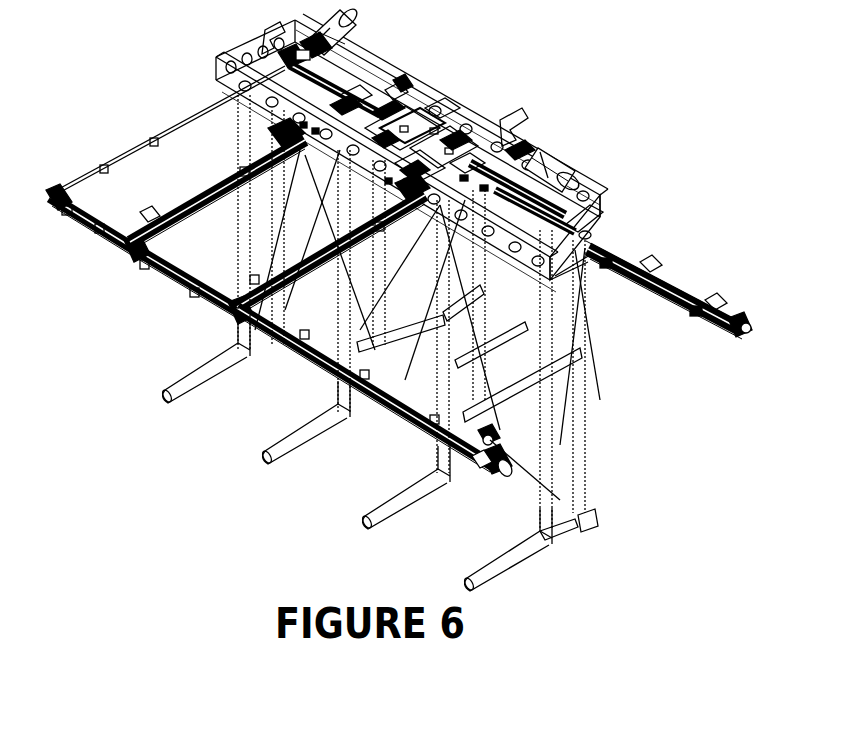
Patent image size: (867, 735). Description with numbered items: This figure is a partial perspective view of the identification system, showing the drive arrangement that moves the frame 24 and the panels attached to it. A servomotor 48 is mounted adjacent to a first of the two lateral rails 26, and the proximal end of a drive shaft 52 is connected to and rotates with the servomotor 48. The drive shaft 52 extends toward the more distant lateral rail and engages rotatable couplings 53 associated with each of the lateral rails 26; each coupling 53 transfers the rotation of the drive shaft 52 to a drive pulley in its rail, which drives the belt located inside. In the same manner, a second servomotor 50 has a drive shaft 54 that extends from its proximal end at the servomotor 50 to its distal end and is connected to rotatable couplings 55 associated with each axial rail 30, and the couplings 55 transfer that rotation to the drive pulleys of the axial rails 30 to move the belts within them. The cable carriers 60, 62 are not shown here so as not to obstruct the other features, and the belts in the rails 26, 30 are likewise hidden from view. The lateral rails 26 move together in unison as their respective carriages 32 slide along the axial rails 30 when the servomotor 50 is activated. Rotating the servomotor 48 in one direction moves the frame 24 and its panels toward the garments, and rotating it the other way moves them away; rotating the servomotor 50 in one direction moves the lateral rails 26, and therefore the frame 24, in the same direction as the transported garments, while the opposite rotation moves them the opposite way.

The frame 24 is at (587, 467).
The lateral rails 26 is at (228, 310).
The axial rails 30 is at (677, 312).
The carriages 32 is at (400, 195).
The servomotor 48 is at (550, 157).
The servomotor 50 is at (353, 27).
The drive shaft 52 is at (457, 113).
The rotatable couplings 53 is at (415, 88).
The drive shaft 54 is at (162, 133).
The rotatable couplings 55 is at (66, 193).
The cable carrier 60 is at (275, 253).
The cable carrier 62 is at (648, 292).